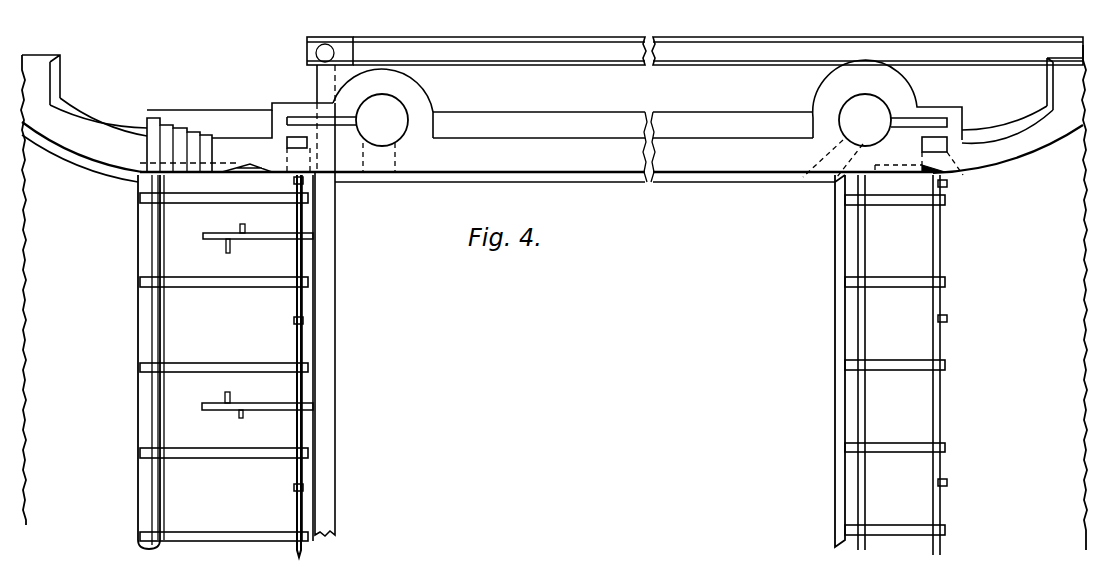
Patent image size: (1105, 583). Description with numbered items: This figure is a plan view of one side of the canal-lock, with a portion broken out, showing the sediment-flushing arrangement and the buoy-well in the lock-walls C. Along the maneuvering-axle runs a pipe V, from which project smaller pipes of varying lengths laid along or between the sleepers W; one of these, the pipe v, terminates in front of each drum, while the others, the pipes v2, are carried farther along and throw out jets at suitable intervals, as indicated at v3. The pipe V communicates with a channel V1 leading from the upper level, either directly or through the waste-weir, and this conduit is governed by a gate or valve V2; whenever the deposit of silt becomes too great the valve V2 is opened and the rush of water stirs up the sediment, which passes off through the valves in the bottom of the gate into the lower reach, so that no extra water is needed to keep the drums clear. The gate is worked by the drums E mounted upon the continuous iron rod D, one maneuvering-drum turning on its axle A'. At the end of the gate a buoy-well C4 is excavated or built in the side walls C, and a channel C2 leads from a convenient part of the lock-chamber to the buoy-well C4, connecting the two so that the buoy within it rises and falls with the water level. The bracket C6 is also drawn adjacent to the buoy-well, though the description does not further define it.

The channel V1 is at (718, 51).
The gate or valve V2 is at (339, 51).
The lock-walls C is at (552, 118).
The channel connecting lock-chamber and buoy-well C2 is at (379, 172).
The buoy-well C4 is at (623, 120).
The bearing bracket C6 is at (831, 170).
The pipe V is at (332, 319).
The sleepers W is at (225, 362).
The axle A' is at (289, 366).
The smaller pipe v is at (312, 487).
The smaller pipe v2 is at (257, 316).
The jets v3 is at (235, 322).
The drums E is at (614, 336).
The continuous rod of iron D is at (895, 365).